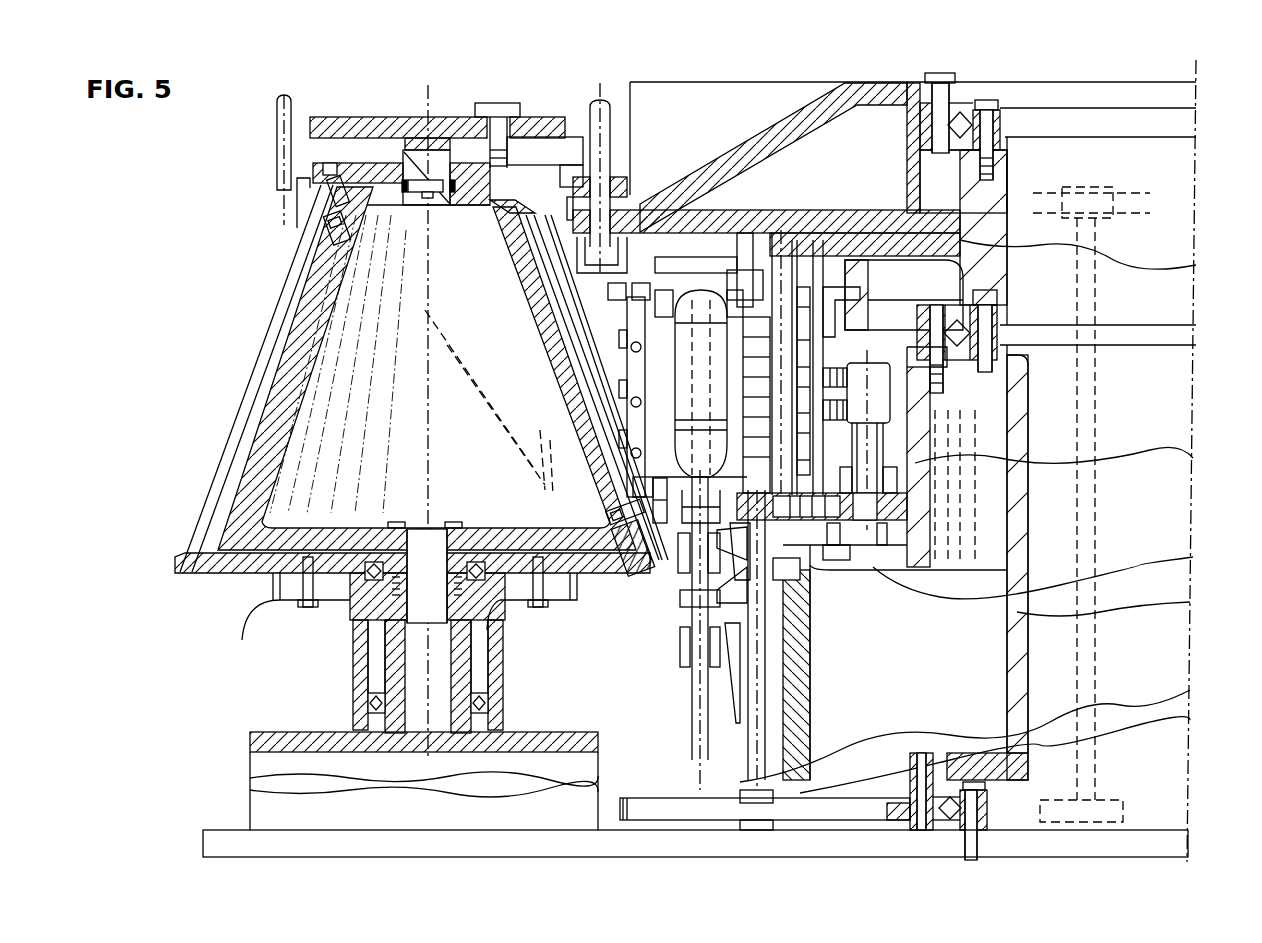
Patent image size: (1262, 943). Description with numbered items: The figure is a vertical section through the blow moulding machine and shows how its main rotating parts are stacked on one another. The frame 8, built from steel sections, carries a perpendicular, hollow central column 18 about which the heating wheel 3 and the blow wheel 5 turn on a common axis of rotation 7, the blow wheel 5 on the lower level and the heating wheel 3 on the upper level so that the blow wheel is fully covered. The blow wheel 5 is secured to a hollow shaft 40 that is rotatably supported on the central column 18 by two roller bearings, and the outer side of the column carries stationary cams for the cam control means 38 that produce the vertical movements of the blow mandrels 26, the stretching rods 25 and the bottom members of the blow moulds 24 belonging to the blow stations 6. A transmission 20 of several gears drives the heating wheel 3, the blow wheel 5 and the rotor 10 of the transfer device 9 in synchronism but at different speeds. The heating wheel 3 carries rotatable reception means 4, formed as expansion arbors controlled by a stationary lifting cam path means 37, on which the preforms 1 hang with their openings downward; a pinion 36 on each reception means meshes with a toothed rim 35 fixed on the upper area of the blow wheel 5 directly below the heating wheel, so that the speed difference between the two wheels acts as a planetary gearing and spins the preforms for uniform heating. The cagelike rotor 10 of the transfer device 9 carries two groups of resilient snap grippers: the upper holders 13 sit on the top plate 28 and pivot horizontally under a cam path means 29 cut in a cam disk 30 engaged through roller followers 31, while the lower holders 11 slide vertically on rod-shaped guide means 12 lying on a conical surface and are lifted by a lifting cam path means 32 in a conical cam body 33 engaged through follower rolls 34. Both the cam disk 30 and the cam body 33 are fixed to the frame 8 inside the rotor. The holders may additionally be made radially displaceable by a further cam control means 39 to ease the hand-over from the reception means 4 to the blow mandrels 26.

The preform 1 is at (278, 113).
The heating wheel 3 is at (763, 140).
The reception means 4 is at (597, 158).
The blow wheel 5 is at (1196, 266).
The blow station 6 is at (607, 320).
The axis of rotation 7 is at (1200, 97).
The frame 8 is at (255, 745).
The transfer device 9 is at (195, 232).
The rotor 10 is at (217, 568).
The lower holders 11 is at (290, 202).
The rod-shaped guide means 12 is at (250, 383).
The upper holders 13 is at (567, 160).
The central column 18 is at (1193, 458).
The transmission 20 is at (1110, 210).
The blow mould 24 is at (683, 360).
The stretching rod 25 is at (683, 610).
The blow mandrel 26 is at (680, 470).
The top plate 28 is at (390, 124).
The cam path means 29 is at (333, 165).
The cam disk 30 is at (355, 168).
The roller followers 31 is at (520, 153).
The lifting cam path means 32 is at (430, 300).
The conical cam body 33 is at (263, 448).
The follower rolls 34 is at (303, 253).
The toothed rim 35 is at (622, 212).
The pinion 36 is at (580, 218).
The lifting cam path means 37 is at (585, 257).
The cam control means 38 is at (1193, 557).
The further cam control means 39 is at (620, 507).
The hollow shaft 40 is at (1190, 602).